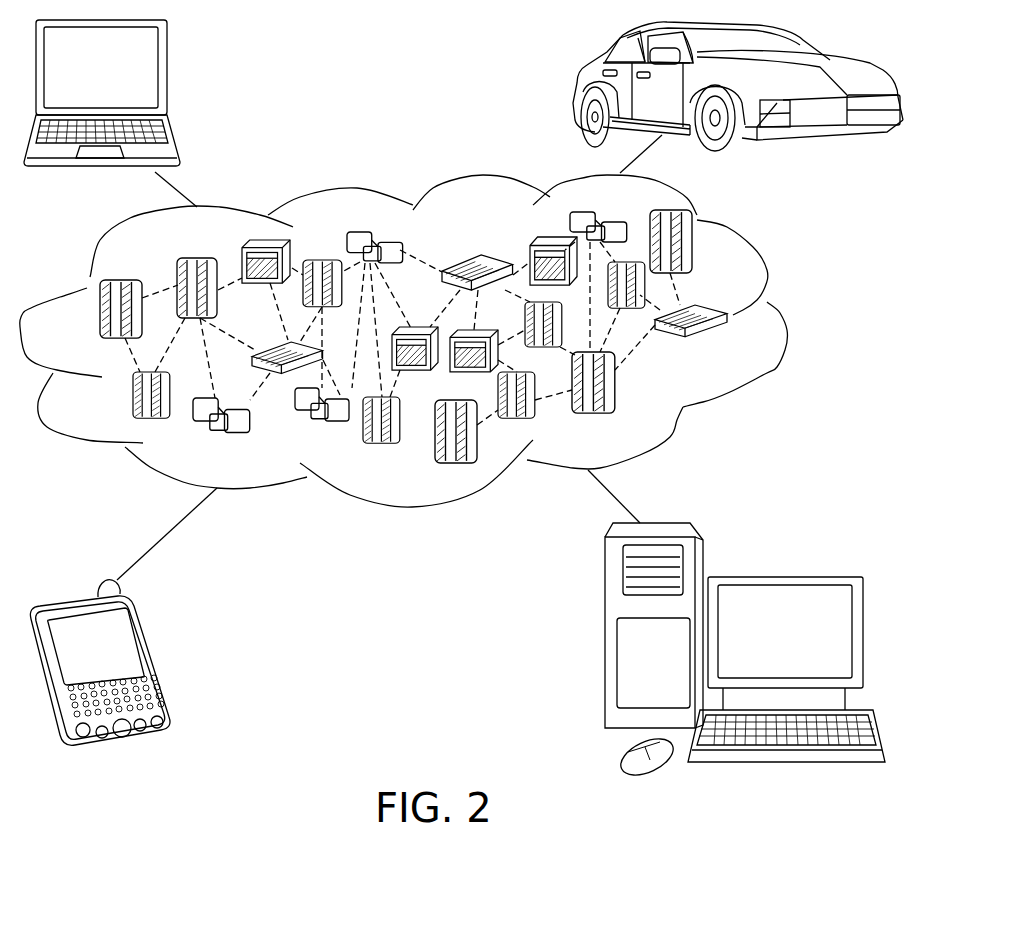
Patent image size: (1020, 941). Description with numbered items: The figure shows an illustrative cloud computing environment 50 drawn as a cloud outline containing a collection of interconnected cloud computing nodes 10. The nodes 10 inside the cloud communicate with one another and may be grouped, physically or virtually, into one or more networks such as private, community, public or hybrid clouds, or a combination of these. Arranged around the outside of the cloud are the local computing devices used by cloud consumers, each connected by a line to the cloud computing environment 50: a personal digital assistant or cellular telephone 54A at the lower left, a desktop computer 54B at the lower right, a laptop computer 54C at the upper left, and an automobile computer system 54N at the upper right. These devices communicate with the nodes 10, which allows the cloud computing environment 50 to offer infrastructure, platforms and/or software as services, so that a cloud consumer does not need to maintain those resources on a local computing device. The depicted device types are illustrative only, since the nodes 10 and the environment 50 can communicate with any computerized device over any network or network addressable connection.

The cloud computing node 10 is at (727, 344).
The cloud computing environment 50 is at (778, 316).
The personal digital assistant or cellular telephone 54A is at (158, 655).
The desktop computer 54B is at (782, 573).
The laptop computer 54C is at (166, 75).
The automobile computer system 54N is at (573, 87).